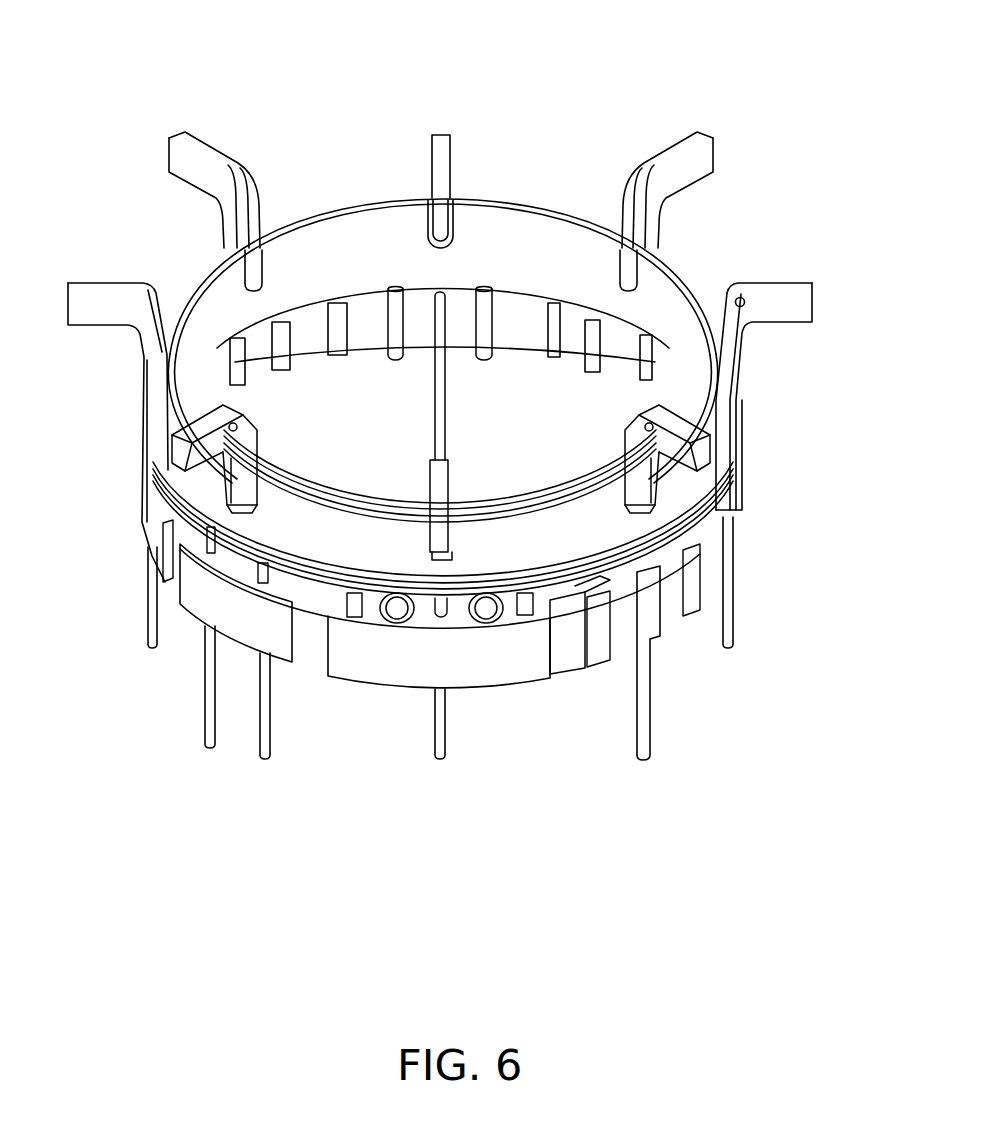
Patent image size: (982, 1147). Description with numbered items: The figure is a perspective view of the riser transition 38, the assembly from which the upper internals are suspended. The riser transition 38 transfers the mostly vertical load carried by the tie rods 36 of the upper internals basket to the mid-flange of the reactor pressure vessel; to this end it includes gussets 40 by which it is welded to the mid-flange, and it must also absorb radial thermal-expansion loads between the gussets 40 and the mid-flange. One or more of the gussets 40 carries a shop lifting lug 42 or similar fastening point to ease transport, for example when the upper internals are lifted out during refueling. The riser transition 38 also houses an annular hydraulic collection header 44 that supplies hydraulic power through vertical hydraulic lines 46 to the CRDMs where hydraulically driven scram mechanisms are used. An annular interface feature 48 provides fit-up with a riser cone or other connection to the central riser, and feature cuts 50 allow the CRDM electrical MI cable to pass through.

The tie rods 36 is at (483, 323).
The riser transition 38 is at (121, 485).
The gussets 40 is at (683, 168).
The shop lifting lug 42 is at (739, 308).
The annular hydraulic collection header 44 is at (692, 490).
The vertical hydraulic lines 46 is at (644, 760).
The annular interface feature 48 is at (356, 492).
The feature cuts 50 is at (667, 559).